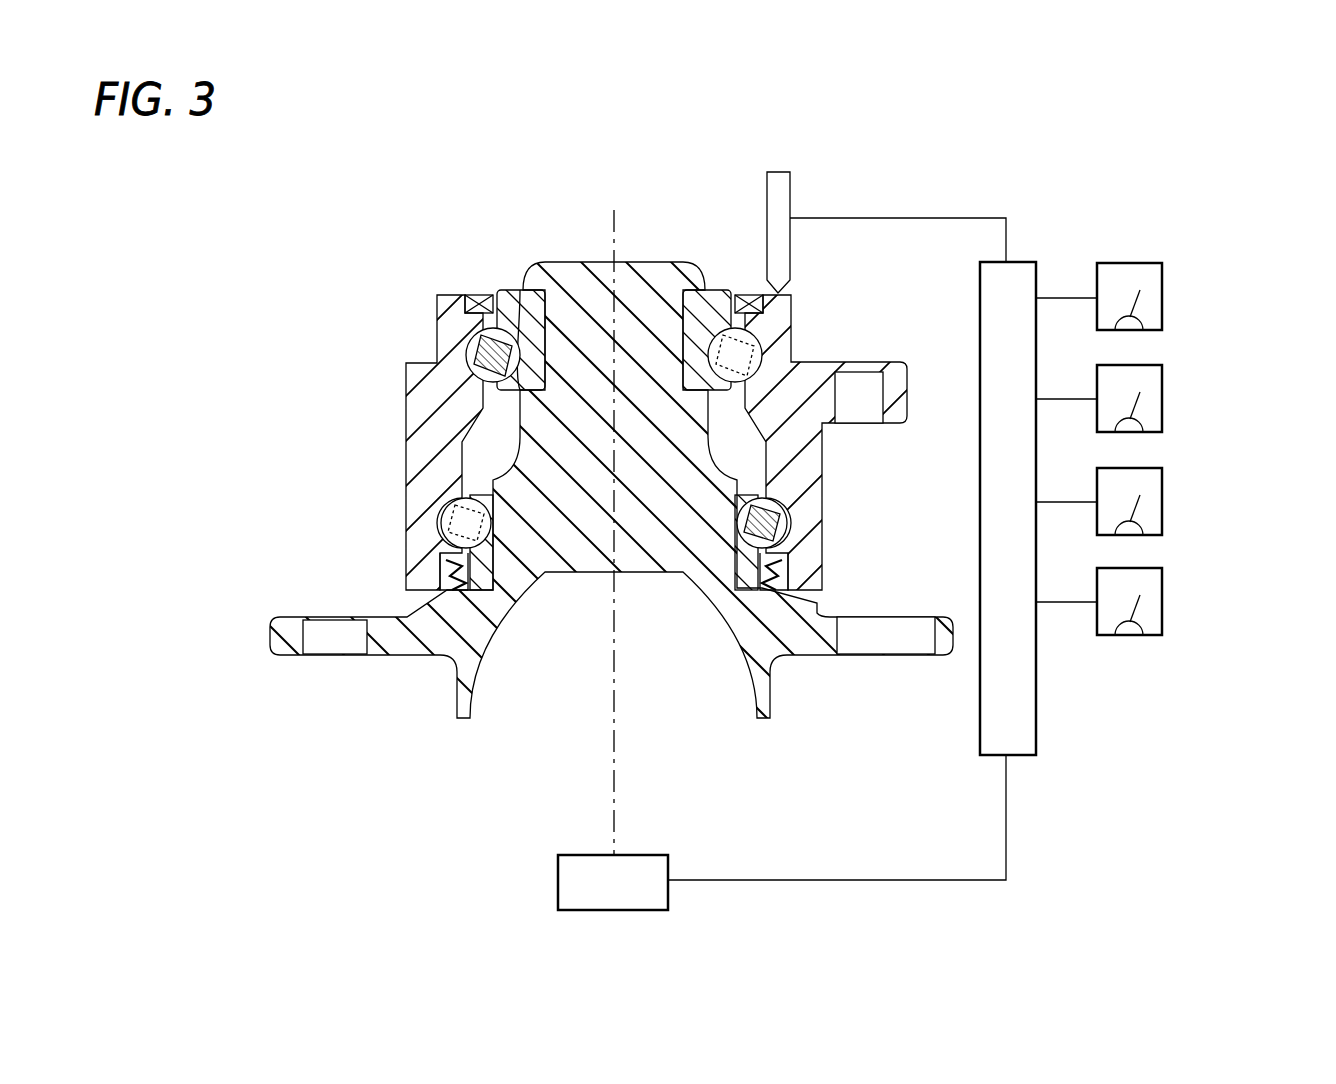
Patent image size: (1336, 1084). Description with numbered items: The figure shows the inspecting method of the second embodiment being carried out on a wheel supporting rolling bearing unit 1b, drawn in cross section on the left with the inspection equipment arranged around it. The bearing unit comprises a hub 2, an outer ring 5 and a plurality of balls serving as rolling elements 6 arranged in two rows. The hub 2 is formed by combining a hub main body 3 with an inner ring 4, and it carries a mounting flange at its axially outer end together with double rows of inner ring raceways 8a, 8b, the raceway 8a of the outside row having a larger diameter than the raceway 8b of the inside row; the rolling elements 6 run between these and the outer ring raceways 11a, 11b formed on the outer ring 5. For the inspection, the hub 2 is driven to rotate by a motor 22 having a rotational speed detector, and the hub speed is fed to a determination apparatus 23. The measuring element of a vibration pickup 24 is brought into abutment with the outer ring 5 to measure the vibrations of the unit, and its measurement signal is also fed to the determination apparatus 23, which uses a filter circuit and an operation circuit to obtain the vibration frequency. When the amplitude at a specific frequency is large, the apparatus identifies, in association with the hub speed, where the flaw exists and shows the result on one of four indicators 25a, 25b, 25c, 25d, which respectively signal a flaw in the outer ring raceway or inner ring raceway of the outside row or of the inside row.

The wheel supporting rolling bearing unit 1b is at (398, 326).
The hub 2 is at (440, 645).
The hub main body 3 is at (415, 640).
The inner ring 4 is at (522, 305).
The outer ring 5 is at (423, 453).
The rolling element 6 is at (480, 297).
The inner ring raceway 8a is at (500, 595).
The inner ring raceway 8b is at (508, 300).
The outer ring raceway 11a is at (447, 532).
The outer ring raceway 11b is at (473, 373).
The motor 22 is at (558, 898).
The determination apparatus 23 is at (1036, 722).
The vibration pickup 24 is at (779, 185).
The indicator 25a is at (1132, 274).
The indicator 25b is at (1132, 376).
The indicator 25c is at (1132, 479).
The indicator 25d is at (1132, 579).